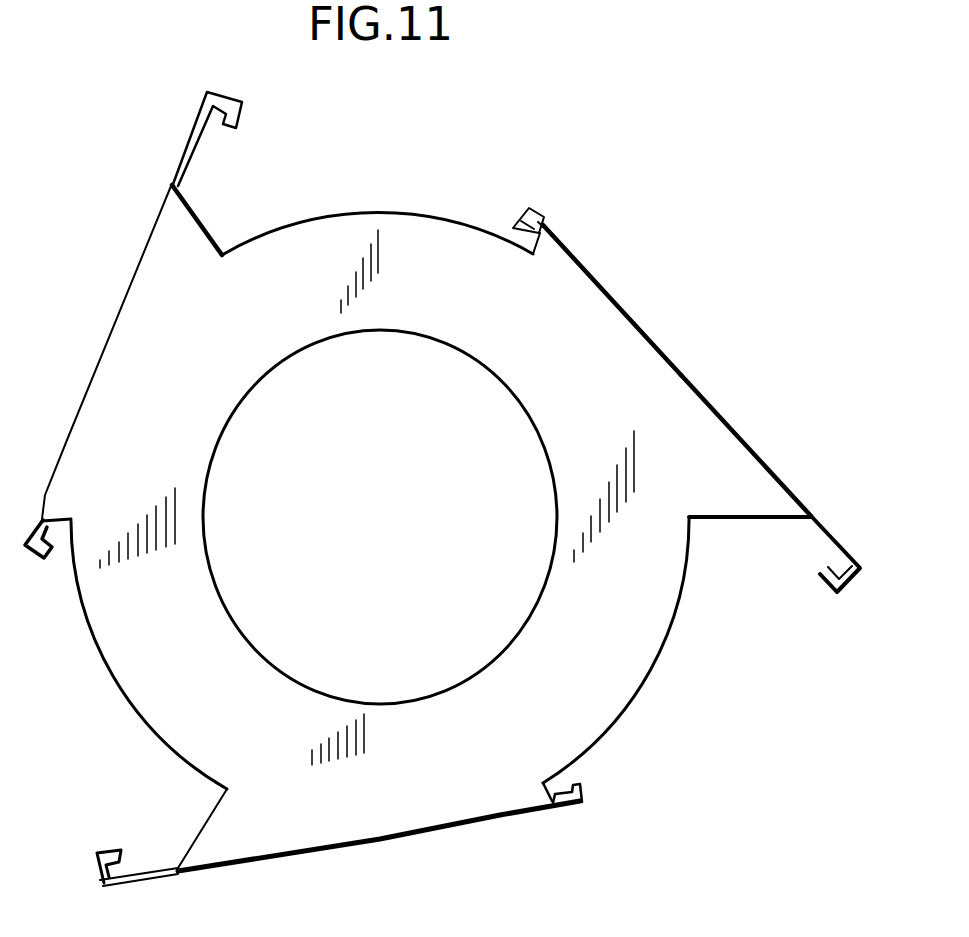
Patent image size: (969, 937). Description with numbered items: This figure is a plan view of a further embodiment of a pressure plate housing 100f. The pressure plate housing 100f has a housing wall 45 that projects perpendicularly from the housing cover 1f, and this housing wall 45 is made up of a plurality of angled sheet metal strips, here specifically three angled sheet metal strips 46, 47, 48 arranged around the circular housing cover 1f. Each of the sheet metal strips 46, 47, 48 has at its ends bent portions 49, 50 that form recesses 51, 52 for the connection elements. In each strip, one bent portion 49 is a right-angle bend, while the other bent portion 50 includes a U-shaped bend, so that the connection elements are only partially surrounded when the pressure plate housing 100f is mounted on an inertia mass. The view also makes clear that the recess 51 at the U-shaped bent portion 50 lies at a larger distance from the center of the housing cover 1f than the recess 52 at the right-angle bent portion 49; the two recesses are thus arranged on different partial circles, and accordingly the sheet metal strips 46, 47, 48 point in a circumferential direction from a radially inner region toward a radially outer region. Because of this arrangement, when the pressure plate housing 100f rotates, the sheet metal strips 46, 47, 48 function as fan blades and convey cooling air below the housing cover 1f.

The pressure plate housing 100f is at (609, 134).
The housing cover 1f is at (408, 238).
The angled sheet metal strip 48 is at (140, 258).
The angled sheet metal strip 47 is at (426, 840).
The bent portion 49 is at (535, 209).
The recess 52 is at (546, 214).
The housing wall 45 is at (640, 314).
The angled sheet metal strip 46 is at (724, 410).
The recess 51 is at (843, 542).
The bent portion 50 is at (851, 588).